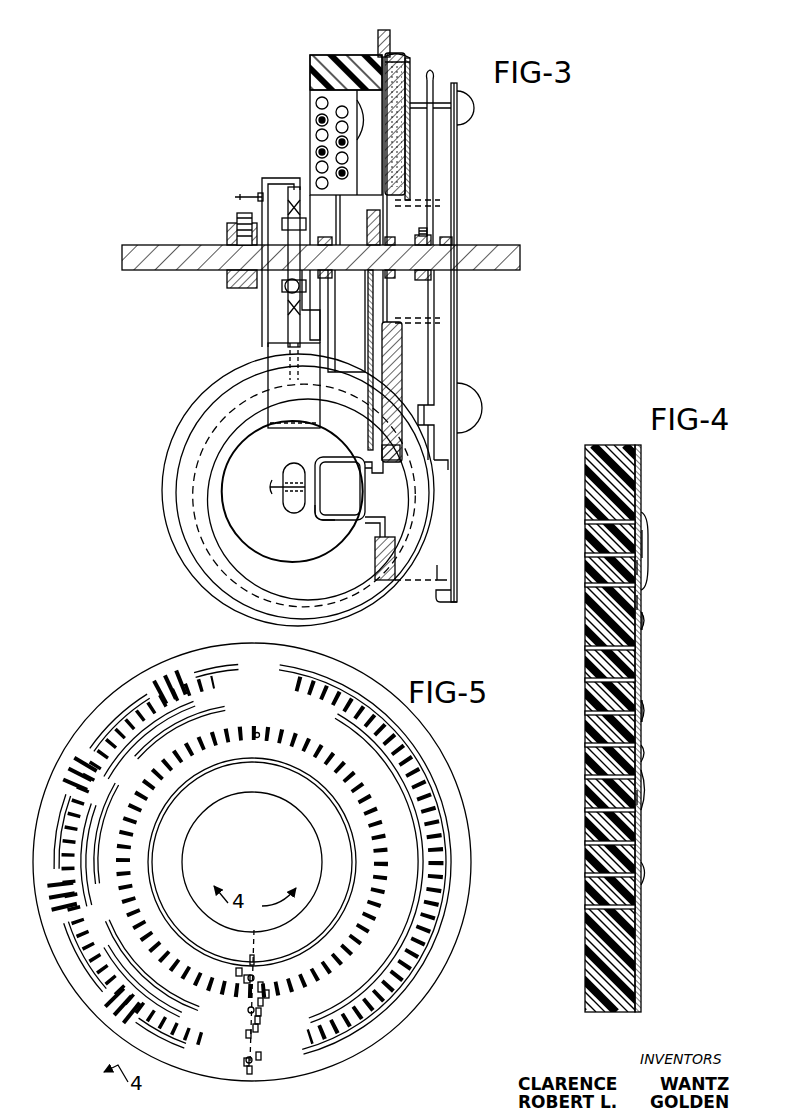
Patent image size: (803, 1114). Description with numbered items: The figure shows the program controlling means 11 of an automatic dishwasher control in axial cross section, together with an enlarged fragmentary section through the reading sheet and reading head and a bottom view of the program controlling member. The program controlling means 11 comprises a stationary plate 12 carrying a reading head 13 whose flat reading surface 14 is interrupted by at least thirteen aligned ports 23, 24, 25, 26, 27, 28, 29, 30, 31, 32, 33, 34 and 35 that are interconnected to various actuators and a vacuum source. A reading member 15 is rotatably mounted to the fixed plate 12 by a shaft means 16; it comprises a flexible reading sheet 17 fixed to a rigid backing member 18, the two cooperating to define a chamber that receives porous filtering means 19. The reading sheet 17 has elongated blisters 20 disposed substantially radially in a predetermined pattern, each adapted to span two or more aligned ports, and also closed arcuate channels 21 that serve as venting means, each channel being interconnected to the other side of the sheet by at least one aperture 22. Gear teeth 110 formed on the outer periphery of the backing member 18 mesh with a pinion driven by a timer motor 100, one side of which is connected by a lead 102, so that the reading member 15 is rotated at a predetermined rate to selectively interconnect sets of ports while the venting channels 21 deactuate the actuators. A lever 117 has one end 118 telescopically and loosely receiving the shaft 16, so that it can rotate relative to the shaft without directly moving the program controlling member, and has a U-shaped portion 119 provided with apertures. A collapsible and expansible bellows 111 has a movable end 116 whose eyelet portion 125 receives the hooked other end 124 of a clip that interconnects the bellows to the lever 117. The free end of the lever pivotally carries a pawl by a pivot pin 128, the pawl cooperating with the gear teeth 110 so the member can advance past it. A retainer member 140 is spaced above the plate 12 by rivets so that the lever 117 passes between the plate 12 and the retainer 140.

In FIG. 3, the program controlling means 11 is at (490, 164).
In FIG. 3, the stationary plate 12 is at (388, 36).
In FIG. 3, the reading head 13 is at (356, 58).
In FIG. 4, the reading head 13 is at (592, 448).
In FIG. 3, the reading surface 14 is at (401, 64).
In FIG. 4, the reading surface 14 is at (644, 570).
In FIG. 3, the reading member 15 is at (412, 48).
In FIG. 3, the shaft means 16 is at (480, 252).
In FIG. 3, the reading sheet 17 is at (410, 100).
In FIG. 4, the reading sheet 17 is at (643, 486).
In FIG. 5, the reading sheet 17 is at (342, 682).
In FIG. 3, the backing member 18 is at (406, 88).
In FIG. 3, the porous filtering means 19 is at (397, 180).
In FIG. 4, the blisters 20 is at (648, 545).
In FIG. 4, the closed arcuate channels 21 is at (644, 603).
In FIG. 4, the aperture 22 is at (648, 620).
In FIG. 4, the port 23 is at (643, 520).
In FIG. 5, the port 23 is at (244, 1062).
In FIG. 4, the port 24 is at (648, 555).
In FIG. 5, the port 24 is at (252, 1064).
In FIG. 4, the port 25 is at (643, 590).
In FIG. 5, the port 25 is at (262, 1052).
In FIG. 4, the port 26 is at (642, 641).
In FIG. 5, the port 26 is at (258, 1026).
In FIG. 4, the port 27 is at (642, 668).
In FIG. 5, the port 27 is at (260, 1018).
In FIG. 4, the port 28 is at (642, 698).
In FIG. 5, the port 28 is at (262, 1010).
In FIG. 4, the port 29 is at (642, 735).
In FIG. 5, the port 29 is at (248, 1028).
In FIG. 4, the port 30 is at (646, 762).
In FIG. 5, the port 30 is at (262, 1000).
In FIG. 4, the port 31 is at (644, 795).
In FIG. 5, the port 31 is at (268, 990).
In FIG. 4, the port 32 is at (642, 818).
In FIG. 5, the port 32 is at (262, 982).
In FIG. 4, the port 33 is at (642, 845).
In FIG. 5, the port 33 is at (238, 966).
In FIG. 4, the port 34 is at (648, 880).
In FIG. 5, the port 34 is at (246, 974).
In FIG. 4, the port 35 is at (642, 908).
In FIG. 5, the port 35 is at (254, 952).
In FIG. 3, the timer motor 100 is at (288, 185).
In FIG. 3, the lead 102 is at (242, 190).
In FIG. 3, the gear teeth 110 is at (380, 492).
In FIG. 3, the bellows 111 is at (168, 512).
In FIG. 3, the movable end of the bellows 116 is at (248, 537).
In FIG. 3, the lever 117 is at (362, 325).
In FIG. 3, the end of the lever 118 is at (368, 228).
In FIG. 3, the U-shaped portion 119 is at (320, 514).
In FIG. 3, the other end of the clip 124 is at (285, 497).
In FIG. 3, the eyelet portion 125 is at (290, 472).
In FIG. 3, the pivot pin 128 is at (378, 566).
In FIG. 3, the retainer member 140 is at (360, 398).